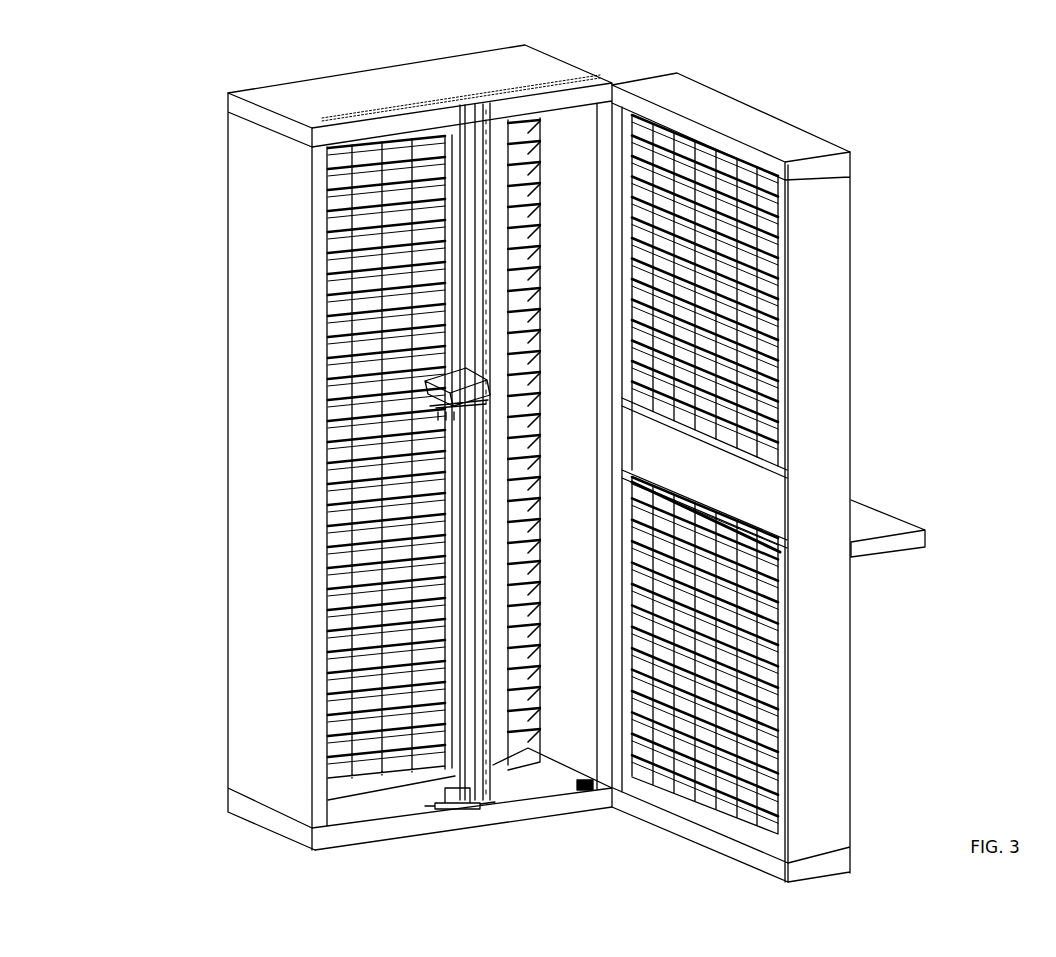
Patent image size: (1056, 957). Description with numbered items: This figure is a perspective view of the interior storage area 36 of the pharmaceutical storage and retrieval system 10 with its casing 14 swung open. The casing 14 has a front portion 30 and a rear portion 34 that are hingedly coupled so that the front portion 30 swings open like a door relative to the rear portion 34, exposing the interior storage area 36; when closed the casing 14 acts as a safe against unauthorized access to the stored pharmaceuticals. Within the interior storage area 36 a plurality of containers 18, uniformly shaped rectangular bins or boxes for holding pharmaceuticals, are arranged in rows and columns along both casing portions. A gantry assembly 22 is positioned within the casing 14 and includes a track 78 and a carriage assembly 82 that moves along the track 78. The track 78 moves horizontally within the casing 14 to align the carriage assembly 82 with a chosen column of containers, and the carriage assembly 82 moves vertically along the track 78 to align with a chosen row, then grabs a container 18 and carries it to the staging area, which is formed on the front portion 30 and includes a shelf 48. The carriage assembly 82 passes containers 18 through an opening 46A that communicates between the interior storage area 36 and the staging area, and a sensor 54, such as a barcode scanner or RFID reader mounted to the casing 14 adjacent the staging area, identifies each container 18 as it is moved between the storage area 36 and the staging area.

The system 10 is at (995, 105).
The casing 14 is at (760, 118).
The containers 18 is at (330, 664).
The gantry assembly 22 is at (400, 428).
The front portion 30 is at (838, 742).
The rear portion 34 is at (233, 139).
The interior storage area 36 is at (574, 120).
The opening 46A is at (778, 556).
The shelf 48 is at (905, 530).
The sensor 54 is at (762, 450).
The track 78 is at (500, 797).
The carriage assembly 82 is at (424, 390).